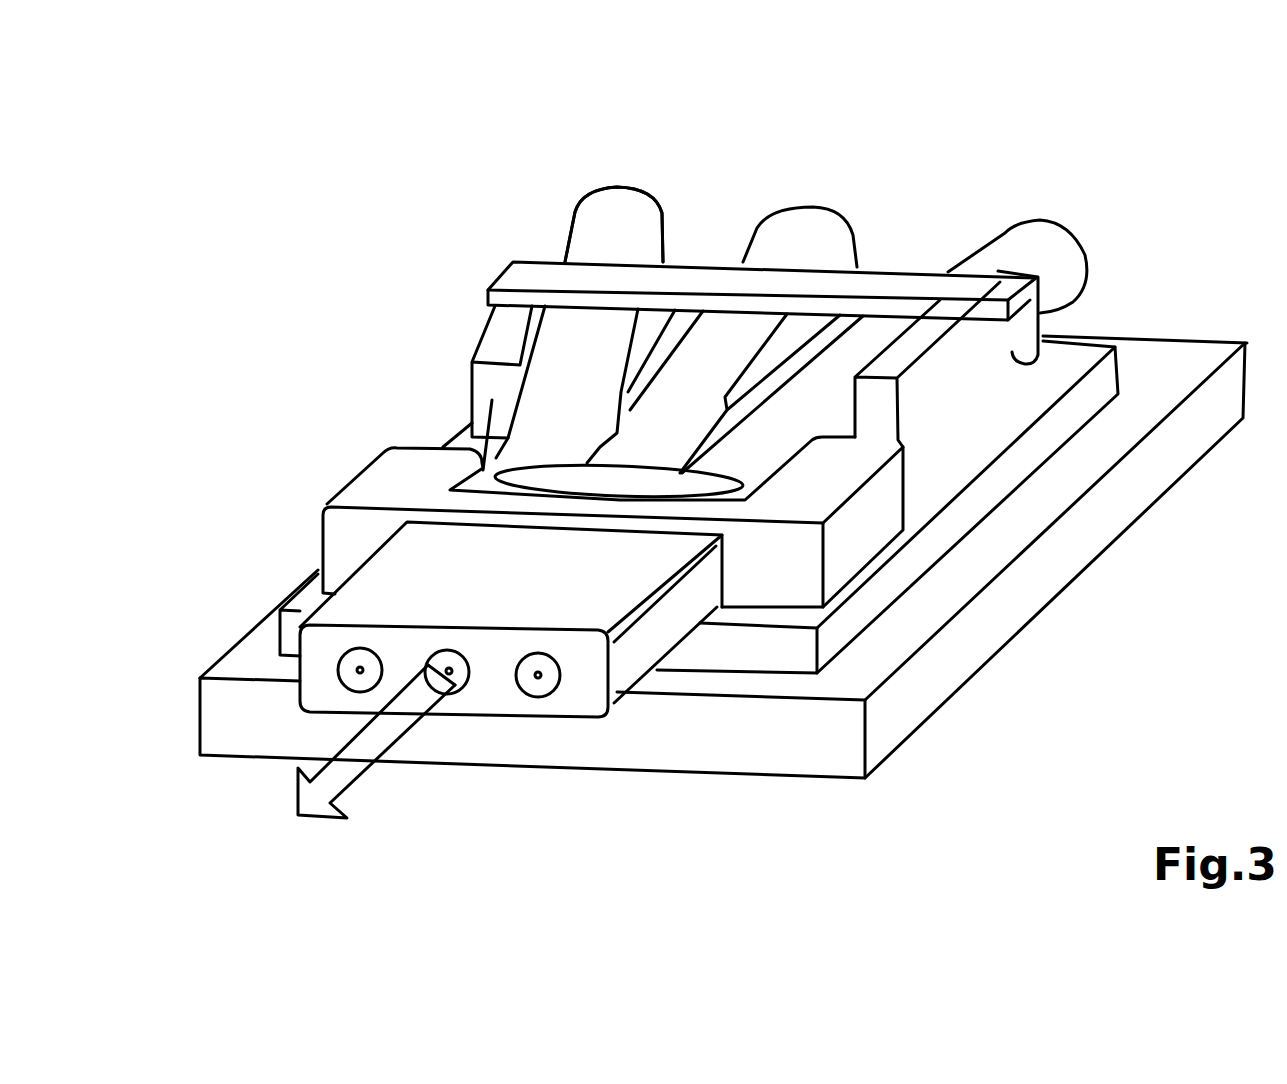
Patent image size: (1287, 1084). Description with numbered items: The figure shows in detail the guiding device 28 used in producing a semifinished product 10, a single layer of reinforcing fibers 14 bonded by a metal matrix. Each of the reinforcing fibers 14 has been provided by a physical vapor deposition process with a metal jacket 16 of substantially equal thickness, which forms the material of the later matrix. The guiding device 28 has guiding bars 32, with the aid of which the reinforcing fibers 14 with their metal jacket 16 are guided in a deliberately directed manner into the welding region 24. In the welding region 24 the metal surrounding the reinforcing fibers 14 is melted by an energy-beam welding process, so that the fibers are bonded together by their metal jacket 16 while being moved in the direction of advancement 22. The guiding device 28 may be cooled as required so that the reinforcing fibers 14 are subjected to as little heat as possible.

The semifinished product 10 is at (582, 695).
The reinforcing fibers 14 is at (1000, 237).
The metal jacket 16 is at (662, 208).
The direction of advancement 22 is at (323, 818).
The welding region 24 is at (523, 474).
The guiding device 28 is at (976, 462).
The guiding bars 32 is at (530, 270).